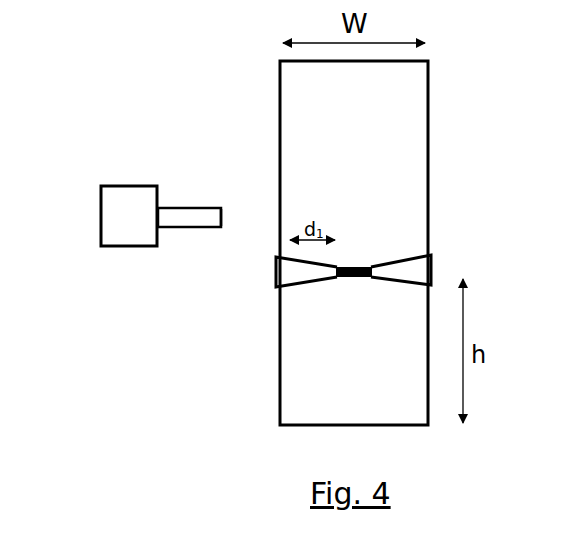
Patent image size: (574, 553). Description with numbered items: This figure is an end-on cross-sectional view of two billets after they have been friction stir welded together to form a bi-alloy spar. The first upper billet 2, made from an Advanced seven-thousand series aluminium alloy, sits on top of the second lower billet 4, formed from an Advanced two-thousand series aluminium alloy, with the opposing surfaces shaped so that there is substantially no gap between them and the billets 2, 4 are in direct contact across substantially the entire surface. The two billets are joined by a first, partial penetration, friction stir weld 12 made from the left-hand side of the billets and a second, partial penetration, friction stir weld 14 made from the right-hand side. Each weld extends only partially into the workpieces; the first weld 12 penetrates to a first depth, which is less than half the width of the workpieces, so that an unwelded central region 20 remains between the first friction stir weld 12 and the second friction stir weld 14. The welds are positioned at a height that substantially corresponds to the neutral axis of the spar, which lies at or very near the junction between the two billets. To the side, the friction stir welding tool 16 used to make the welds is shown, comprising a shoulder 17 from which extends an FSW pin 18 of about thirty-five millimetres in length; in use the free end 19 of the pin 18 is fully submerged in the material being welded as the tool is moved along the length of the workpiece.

The first upper billet 2 is at (354, 165).
The second lower billet 4 is at (354, 347).
The first partial penetration friction stir weld 12 is at (292, 272).
The second partial penetration friction stir weld 14 is at (403, 273).
The friction stir welding tool 16 is at (135, 215).
The shoulder 17 is at (122, 225).
The FSW pin 18 is at (187, 229).
The free end of the pin 19 is at (223, 218).
The unwelded central region 20 is at (358, 259).